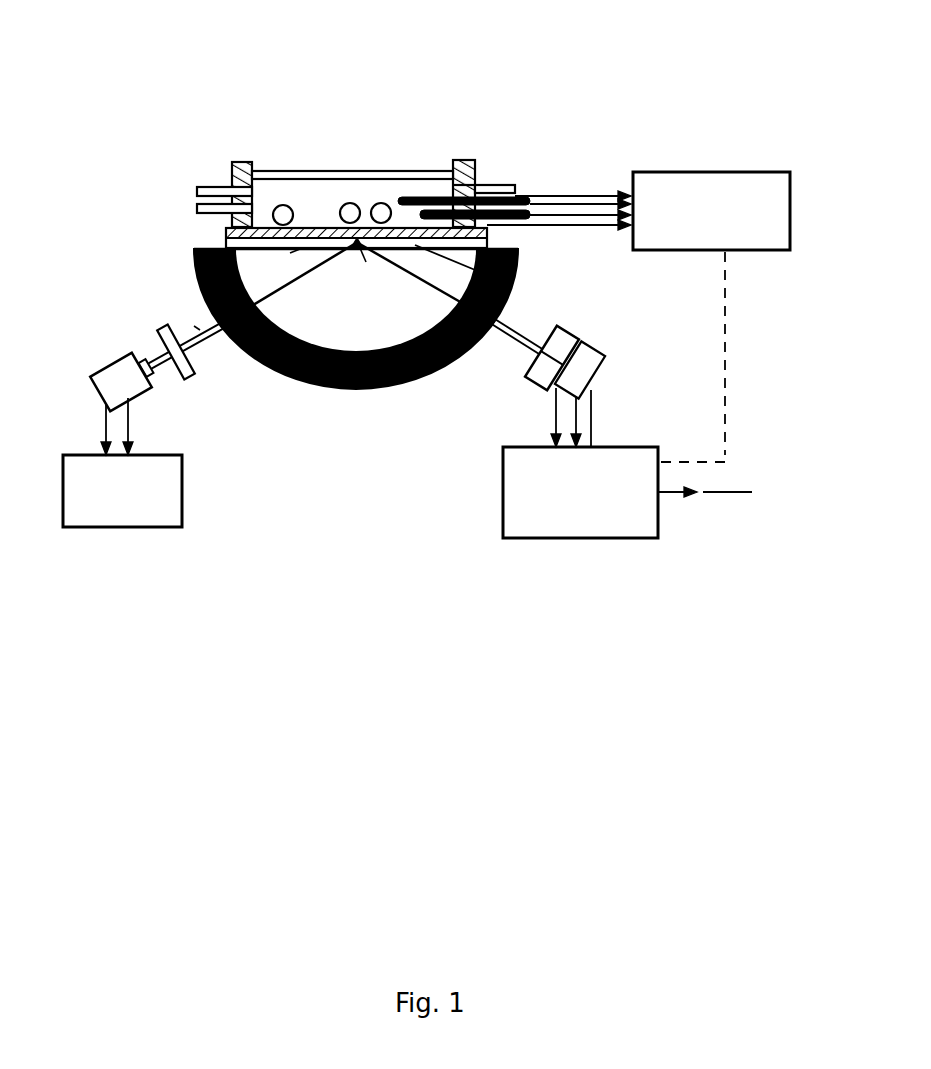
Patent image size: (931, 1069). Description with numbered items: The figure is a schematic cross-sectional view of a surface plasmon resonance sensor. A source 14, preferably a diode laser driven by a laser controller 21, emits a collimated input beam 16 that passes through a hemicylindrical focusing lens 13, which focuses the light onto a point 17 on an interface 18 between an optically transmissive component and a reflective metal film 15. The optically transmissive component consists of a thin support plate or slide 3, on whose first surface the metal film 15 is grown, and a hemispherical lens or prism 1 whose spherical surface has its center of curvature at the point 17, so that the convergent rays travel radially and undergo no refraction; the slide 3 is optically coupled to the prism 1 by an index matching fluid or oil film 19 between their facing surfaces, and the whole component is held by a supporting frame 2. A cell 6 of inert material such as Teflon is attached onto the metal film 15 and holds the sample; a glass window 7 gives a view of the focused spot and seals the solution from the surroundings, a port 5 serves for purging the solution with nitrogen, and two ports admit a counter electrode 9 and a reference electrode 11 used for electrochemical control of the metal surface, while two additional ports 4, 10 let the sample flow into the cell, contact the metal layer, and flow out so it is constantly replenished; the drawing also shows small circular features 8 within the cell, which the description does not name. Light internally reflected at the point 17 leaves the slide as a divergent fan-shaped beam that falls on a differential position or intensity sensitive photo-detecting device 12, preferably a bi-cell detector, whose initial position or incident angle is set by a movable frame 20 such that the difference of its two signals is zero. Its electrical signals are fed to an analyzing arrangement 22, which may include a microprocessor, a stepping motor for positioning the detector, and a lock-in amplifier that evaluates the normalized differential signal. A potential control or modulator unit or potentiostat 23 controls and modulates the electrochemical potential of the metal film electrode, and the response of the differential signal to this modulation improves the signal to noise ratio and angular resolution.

The hemispherical lens or prism 1 is at (360, 282).
The supporting frame 2 is at (362, 387).
The support plate or slide 3 is at (227, 243).
The additional port 4 is at (198, 212).
The port 5 is at (198, 188).
The cell 6 is at (237, 160).
The glass window 7 is at (378, 170).
The electrodes 8 is at (377, 202).
The counter electrode 9 is at (528, 200).
The additional port 10 is at (516, 195).
The reference electrode 11 is at (536, 212).
The differential photo-detecting device 12 is at (578, 347).
The focusing lens 13 is at (192, 373).
The source 14 is at (117, 380).
The metal film 15 is at (485, 231).
The collimated input beam 16 is at (196, 327).
The point 17 is at (362, 250).
The interface 18 is at (480, 272).
The index matching fluid or oil film 19 is at (290, 253).
The movable frame 20 is at (600, 369).
The laser controller 21 is at (88, 520).
The analyzing arrangement 22 is at (628, 528).
The potential control or modulator unit 23 is at (763, 240).